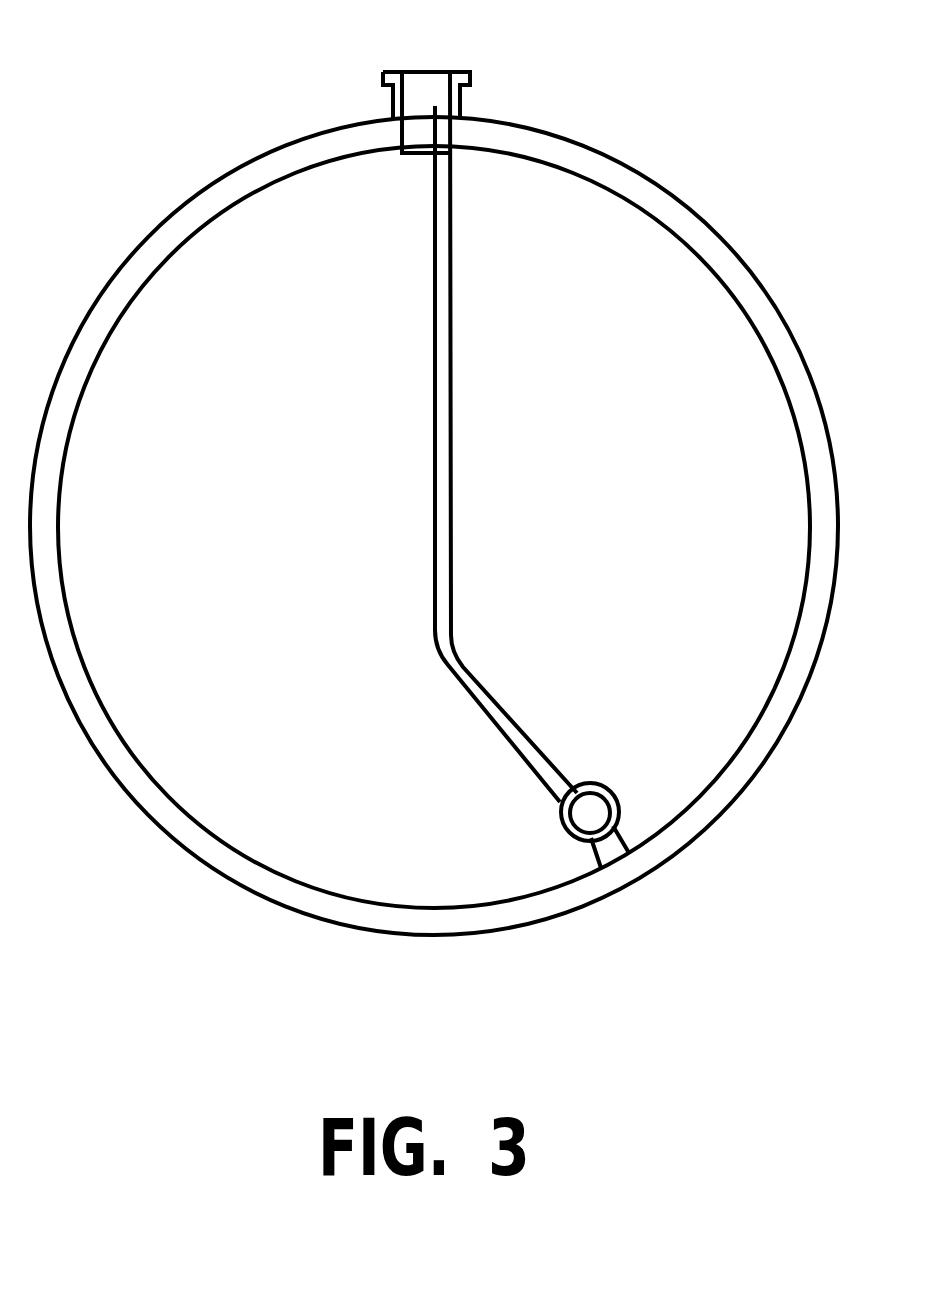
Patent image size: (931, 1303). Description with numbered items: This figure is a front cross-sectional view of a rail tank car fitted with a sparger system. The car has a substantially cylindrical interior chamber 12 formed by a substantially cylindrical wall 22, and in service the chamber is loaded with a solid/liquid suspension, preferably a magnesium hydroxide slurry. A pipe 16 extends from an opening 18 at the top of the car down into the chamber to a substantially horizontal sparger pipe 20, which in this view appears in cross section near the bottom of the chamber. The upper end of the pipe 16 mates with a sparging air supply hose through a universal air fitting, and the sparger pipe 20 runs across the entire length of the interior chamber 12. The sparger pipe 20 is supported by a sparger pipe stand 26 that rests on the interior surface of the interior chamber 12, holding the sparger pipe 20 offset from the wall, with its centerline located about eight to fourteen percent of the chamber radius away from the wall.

The interior chamber 12 is at (246, 248).
The pipe 16 is at (470, 300).
The opening 18 is at (428, 72).
The sparger pipe 20 is at (613, 800).
The cylindrical wall 22 is at (670, 205).
The sparger pipe stand 26 is at (607, 847).